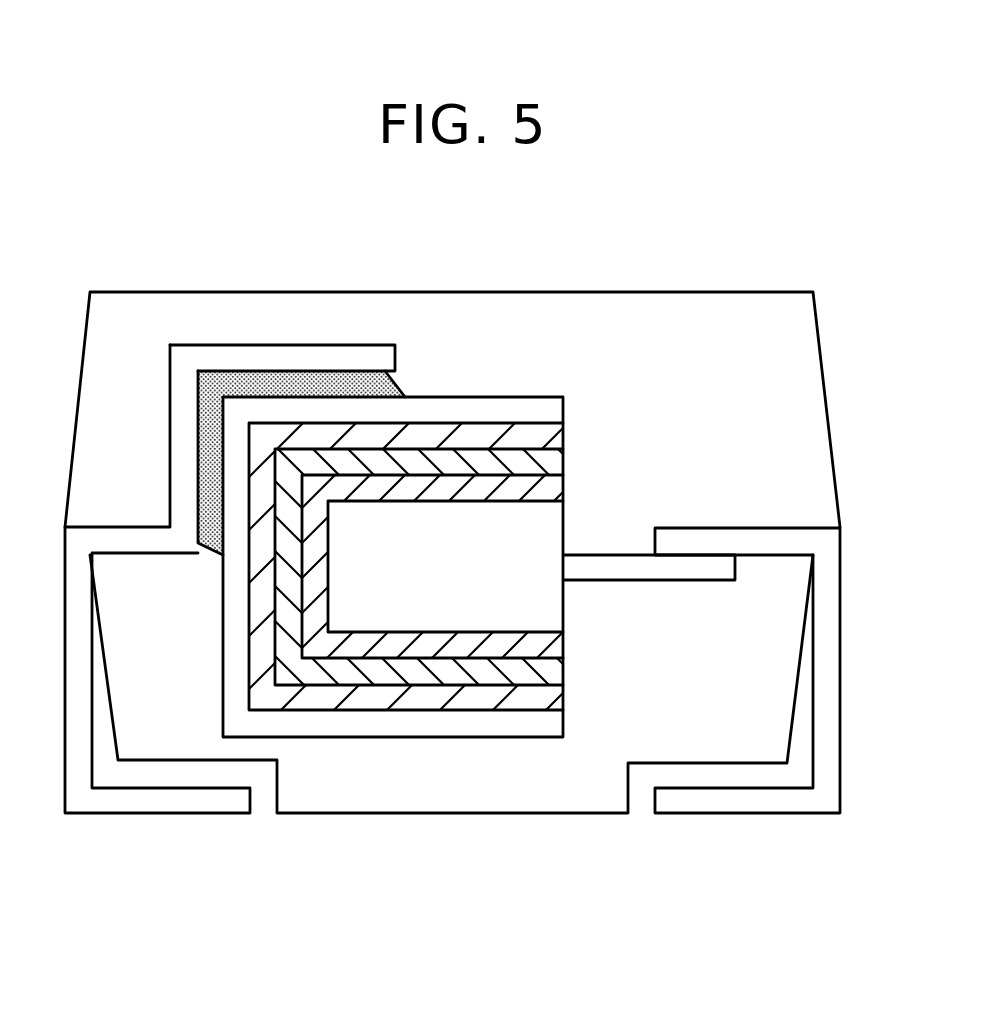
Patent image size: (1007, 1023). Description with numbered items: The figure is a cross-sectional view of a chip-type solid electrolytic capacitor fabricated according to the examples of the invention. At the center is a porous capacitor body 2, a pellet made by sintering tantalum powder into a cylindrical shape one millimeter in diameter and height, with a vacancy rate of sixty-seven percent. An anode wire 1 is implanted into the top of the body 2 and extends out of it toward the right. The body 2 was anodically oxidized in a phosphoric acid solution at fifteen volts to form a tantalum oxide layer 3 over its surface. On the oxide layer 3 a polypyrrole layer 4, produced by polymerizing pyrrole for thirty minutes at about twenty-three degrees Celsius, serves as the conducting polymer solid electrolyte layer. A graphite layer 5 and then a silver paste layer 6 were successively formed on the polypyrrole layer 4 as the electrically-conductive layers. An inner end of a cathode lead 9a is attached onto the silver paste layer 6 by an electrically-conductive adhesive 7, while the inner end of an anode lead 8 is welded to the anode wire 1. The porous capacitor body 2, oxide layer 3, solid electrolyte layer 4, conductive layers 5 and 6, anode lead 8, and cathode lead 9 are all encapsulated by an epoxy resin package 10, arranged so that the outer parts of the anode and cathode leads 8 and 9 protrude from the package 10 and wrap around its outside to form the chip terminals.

The anode wire 1 is at (693, 572).
The porous capacitor body 2 is at (550, 528).
The tantalum oxide layer 3 is at (548, 492).
The polypyrrole layer 4 is at (552, 458).
The graphite layer 5 is at (548, 435).
The silver paste layer 6 is at (548, 407).
The electrically-conductive adhesive 7 is at (393, 382).
The anode lead 8 is at (787, 803).
The cathode lead 9 is at (143, 803).
The inner end of cathode lead 9a is at (253, 353).
The epoxy resin package 10 is at (430, 808).